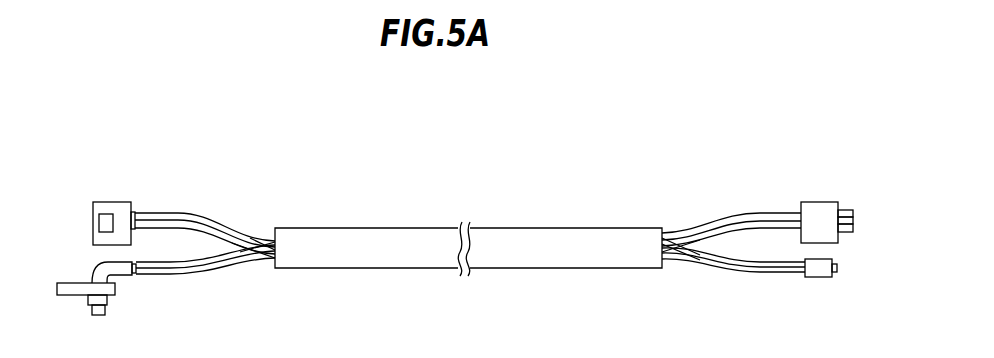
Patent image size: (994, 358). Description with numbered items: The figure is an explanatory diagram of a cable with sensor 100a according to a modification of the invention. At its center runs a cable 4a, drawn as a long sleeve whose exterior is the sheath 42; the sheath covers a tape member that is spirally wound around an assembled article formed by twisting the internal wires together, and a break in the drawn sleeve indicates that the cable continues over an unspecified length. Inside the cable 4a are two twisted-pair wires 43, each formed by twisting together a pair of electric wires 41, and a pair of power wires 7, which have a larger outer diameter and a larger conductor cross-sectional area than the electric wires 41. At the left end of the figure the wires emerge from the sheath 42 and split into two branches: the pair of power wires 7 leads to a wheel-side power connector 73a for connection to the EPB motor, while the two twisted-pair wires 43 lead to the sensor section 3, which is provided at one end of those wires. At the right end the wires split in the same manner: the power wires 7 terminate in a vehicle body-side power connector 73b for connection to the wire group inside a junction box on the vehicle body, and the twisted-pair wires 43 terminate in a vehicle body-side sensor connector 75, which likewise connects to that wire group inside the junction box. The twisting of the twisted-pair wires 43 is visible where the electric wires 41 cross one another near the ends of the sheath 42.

The cable with sensor 100a is at (624, 197).
The cable 4a is at (302, 225).
The sheath 42 is at (588, 258).
The power wires 7 is at (173, 223).
The electric wires 41 is at (180, 274).
The twisted-pair wires 43 is at (244, 259).
The wheel-side power connector 73a is at (93, 227).
The vehicle body-side power connector 73b is at (853, 228).
The vehicle body-side sensor connector 75 is at (838, 270).
The sensor section 3 is at (92, 270).